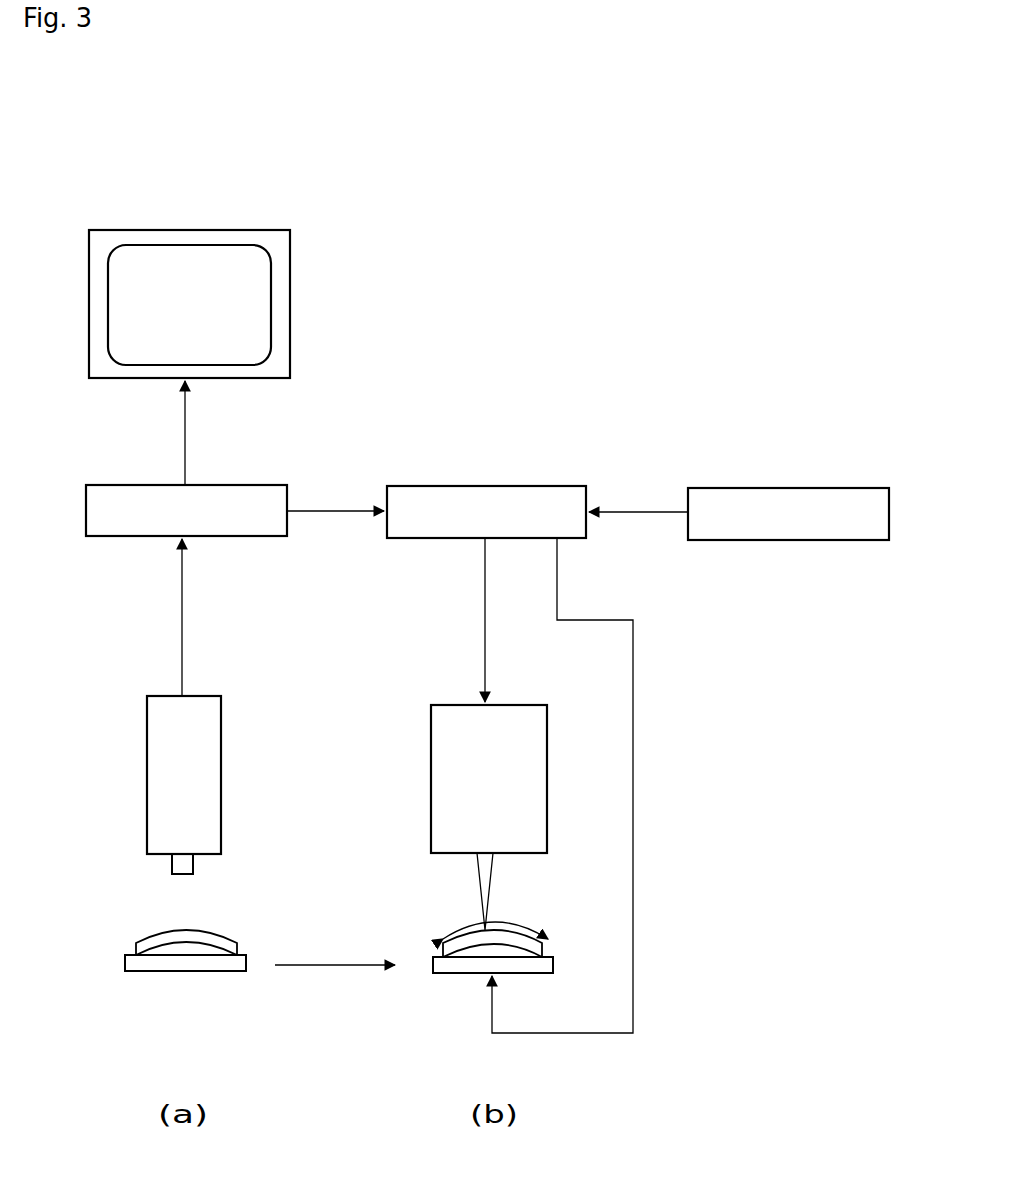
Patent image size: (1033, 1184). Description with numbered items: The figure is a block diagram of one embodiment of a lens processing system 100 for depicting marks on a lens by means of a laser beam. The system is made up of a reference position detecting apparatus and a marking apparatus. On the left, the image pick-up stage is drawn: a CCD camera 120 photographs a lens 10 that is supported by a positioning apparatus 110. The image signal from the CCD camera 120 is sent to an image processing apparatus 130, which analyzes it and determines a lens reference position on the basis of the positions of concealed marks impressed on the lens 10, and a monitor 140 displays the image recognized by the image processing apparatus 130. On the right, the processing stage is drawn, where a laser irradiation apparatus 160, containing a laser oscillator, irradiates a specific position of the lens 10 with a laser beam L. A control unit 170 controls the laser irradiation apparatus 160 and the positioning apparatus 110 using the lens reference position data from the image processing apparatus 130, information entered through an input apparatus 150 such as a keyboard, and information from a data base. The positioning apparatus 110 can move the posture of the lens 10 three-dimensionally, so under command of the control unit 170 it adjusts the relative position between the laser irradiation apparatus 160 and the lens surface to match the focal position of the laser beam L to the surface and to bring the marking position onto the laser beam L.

The lens processing system 100 is at (668, 246).
The monitor 140 is at (290, 307).
The image processing apparatus 130 is at (281, 485).
The control unit 170 is at (544, 486).
The input apparatus 150 is at (832, 488).
The CCD camera 120 is at (221, 735).
The laser irradiation apparatus 160 is at (431, 803).
The laser beam L is at (476, 880).
The lens 10 is at (225, 935).
The positioning apparatus 110 is at (207, 971).